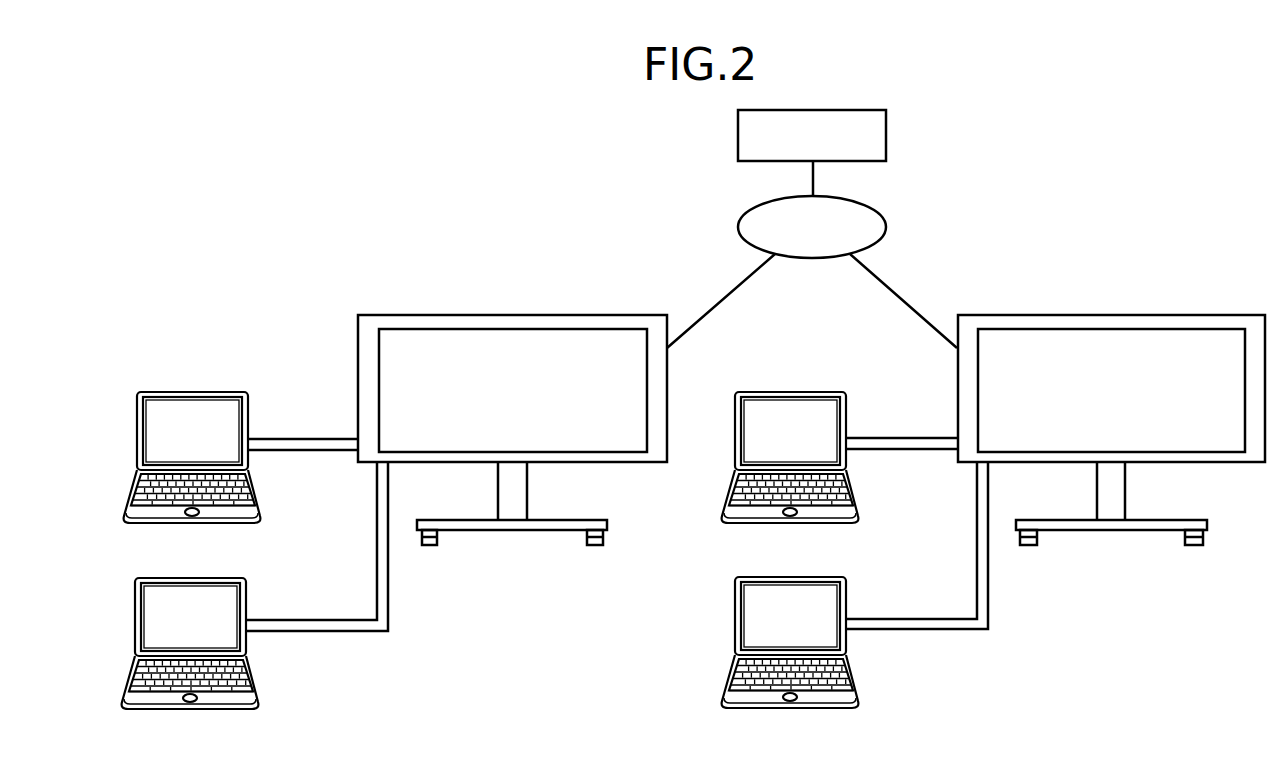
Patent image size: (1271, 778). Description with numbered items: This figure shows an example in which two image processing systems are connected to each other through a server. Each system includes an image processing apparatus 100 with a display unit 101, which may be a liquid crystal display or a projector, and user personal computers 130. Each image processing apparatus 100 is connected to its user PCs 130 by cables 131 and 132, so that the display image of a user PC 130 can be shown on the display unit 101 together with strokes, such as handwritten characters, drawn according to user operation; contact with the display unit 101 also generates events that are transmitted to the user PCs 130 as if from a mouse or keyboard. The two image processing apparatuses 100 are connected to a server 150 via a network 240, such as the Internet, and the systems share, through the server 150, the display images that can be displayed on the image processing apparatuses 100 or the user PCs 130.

The image processing apparatus 100 is at (597, 315).
The display unit 101 is at (413, 329).
The user personal computer 130 is at (227, 392).
The cable 131 is at (304, 439).
The cable 132 is at (304, 450).
The server 150 is at (887, 143).
The network 240 is at (887, 230).